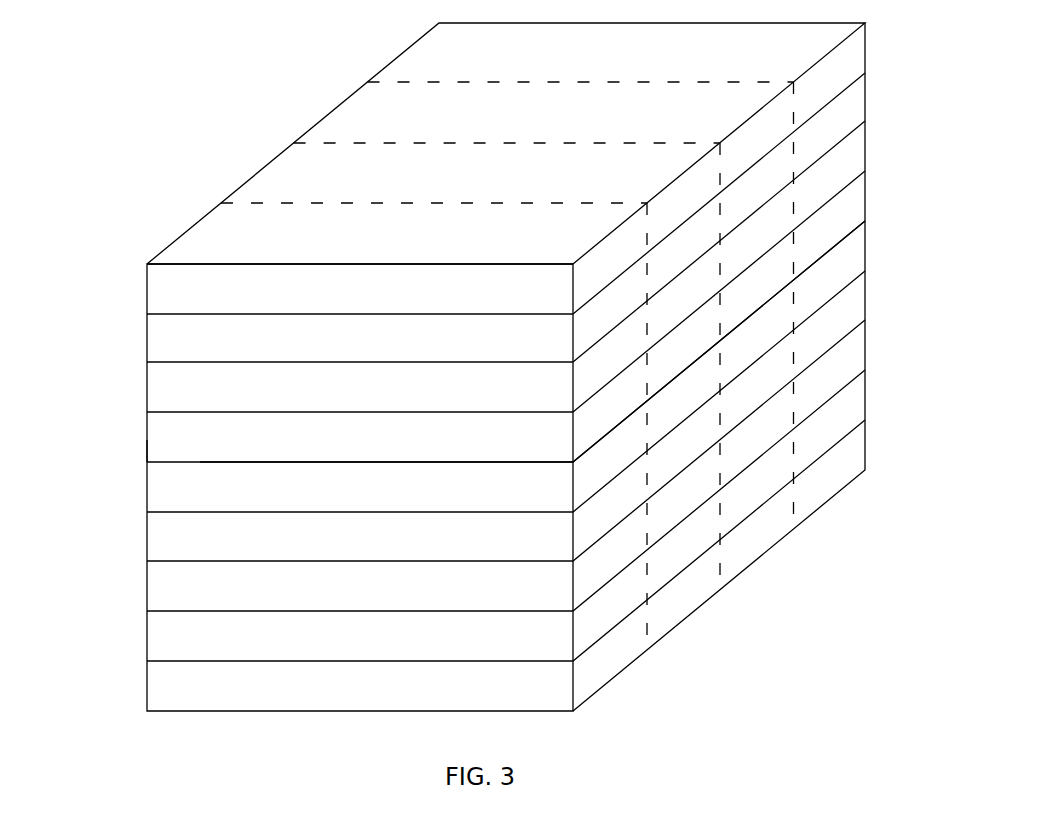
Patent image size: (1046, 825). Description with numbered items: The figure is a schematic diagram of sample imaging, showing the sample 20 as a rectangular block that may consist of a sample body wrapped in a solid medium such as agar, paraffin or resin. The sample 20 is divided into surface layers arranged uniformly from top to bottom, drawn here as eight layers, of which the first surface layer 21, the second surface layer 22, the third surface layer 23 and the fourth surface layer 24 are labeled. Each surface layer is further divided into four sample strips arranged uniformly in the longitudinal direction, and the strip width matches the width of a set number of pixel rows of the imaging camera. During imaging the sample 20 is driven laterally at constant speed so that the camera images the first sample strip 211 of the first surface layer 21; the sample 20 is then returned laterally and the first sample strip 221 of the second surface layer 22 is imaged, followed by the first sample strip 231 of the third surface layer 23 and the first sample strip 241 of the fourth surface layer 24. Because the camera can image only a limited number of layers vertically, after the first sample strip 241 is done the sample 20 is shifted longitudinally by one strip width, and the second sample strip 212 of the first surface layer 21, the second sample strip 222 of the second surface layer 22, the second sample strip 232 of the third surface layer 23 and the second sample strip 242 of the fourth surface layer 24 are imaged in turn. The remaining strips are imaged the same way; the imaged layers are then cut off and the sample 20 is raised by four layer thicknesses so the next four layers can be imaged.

The sample 20 is at (623, 538).
The first surface layer 21 is at (493, 168).
The second surface layer 22 is at (502, 232).
The third surface layer 23 is at (502, 281).
The fourth surface layer 24 is at (502, 330).
The first sample strip of the first surface layer 211 is at (227, 245).
The second sample strip of the first surface layer 212 is at (300, 175).
The first sample strip of the second surface layer 221 is at (227, 353).
The second sample strip of the second surface layer 222 is at (672, 263).
The first sample strip of the third surface layer 231 is at (227, 402).
The second sample strip of the third surface layer 232 is at (672, 315).
The first sample strip of the fourth surface layer 241 is at (227, 453).
The second sample strip of the fourth surface layer 242 is at (667, 365).